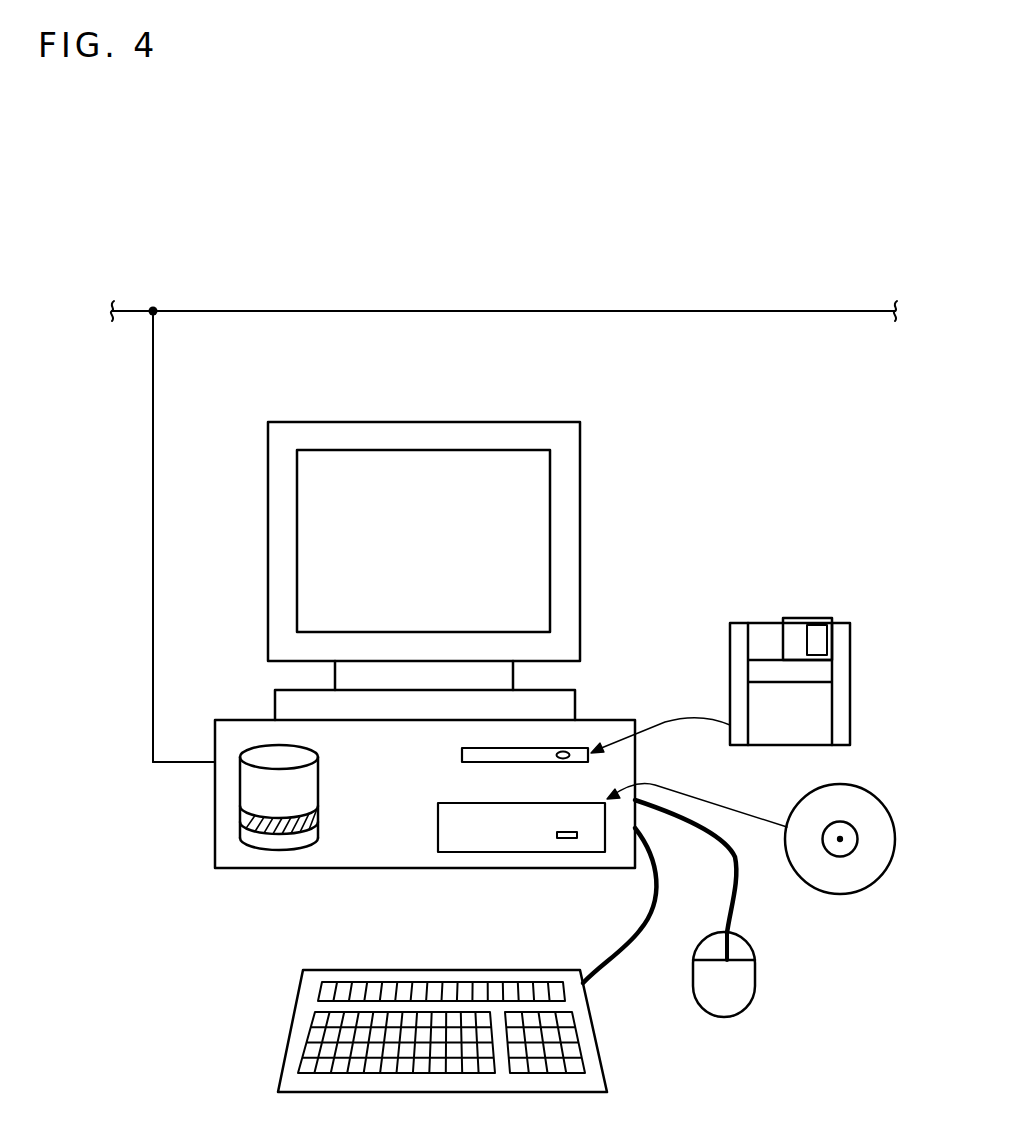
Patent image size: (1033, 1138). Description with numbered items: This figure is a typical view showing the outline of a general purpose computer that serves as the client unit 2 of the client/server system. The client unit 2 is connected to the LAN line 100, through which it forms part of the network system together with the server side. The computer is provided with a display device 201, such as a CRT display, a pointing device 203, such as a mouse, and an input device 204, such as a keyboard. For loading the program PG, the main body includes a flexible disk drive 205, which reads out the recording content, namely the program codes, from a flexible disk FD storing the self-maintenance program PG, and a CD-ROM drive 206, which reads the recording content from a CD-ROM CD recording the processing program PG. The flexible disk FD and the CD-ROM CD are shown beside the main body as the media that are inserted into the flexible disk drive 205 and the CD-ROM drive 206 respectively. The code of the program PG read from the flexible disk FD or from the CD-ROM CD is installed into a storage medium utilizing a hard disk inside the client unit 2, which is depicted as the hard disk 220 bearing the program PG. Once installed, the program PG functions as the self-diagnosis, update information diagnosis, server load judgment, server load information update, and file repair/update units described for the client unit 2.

The LAN line 100 is at (682, 310).
The display device 201 is at (495, 421).
The client unit 2 is at (618, 697).
The flexible disk drive 205 is at (462, 754).
The CD-ROM drive 206 is at (438, 828).
The hard disk 220 is at (275, 850).
The self-maintenance program PG is at (240, 821).
The flexible disk FD is at (841, 622).
The CD-ROM CD is at (867, 895).
The pointing device 203 is at (755, 985).
The input device 204 is at (290, 1033).